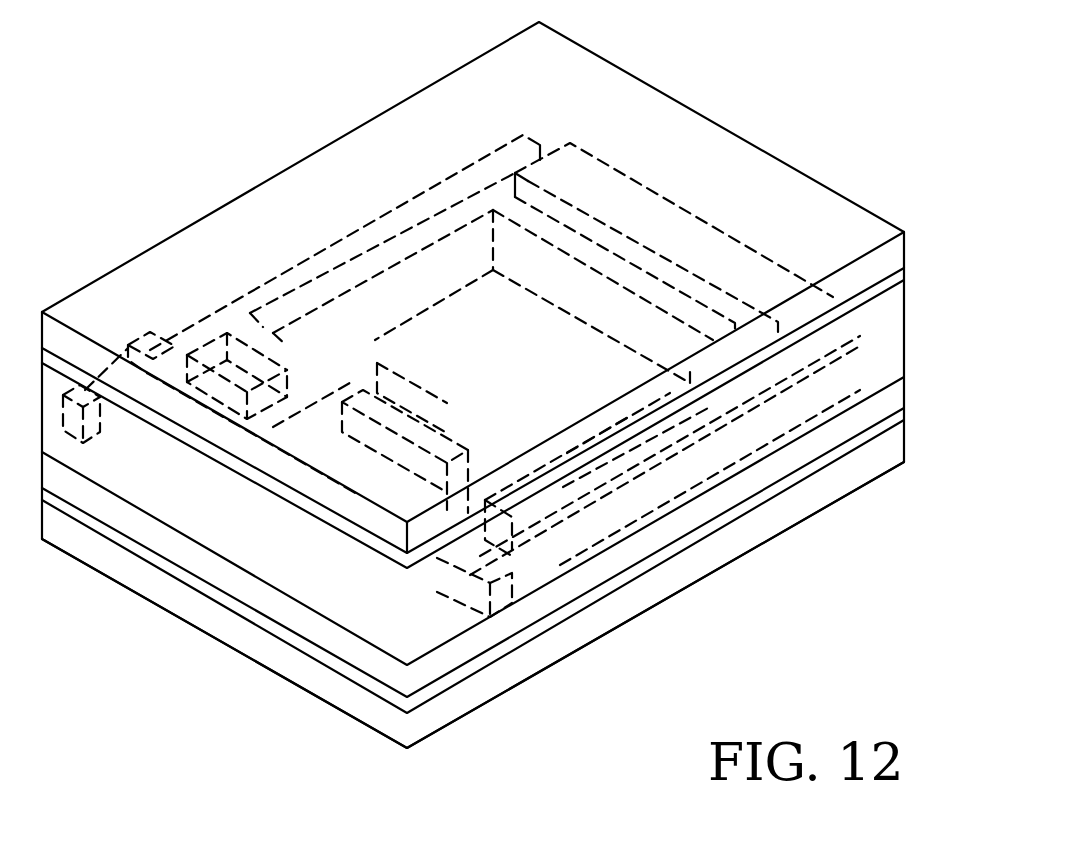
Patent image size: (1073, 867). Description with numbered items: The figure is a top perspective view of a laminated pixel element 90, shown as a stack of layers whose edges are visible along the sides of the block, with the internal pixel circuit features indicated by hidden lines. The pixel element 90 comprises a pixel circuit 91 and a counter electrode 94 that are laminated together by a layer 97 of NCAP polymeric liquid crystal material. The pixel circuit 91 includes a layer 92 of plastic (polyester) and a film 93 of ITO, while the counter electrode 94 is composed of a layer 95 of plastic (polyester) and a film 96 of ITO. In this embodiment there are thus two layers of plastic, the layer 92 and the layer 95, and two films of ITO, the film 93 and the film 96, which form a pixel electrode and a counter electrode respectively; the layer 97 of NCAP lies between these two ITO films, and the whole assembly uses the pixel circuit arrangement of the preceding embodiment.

The laminated structure or pixel element 90 is at (993, 320).
The pixel circuit 91 is at (160, 626).
The layer of plastic (polyester) 92 is at (510, 676).
The film of ITO 93 is at (570, 610).
The counter electrode 94 is at (833, 164).
The layer of plastic (polyester) 95 is at (892, 255).
The film of ITO 96 is at (880, 292).
The layer of NCAP polymeric liquid crystal material 97 is at (880, 345).